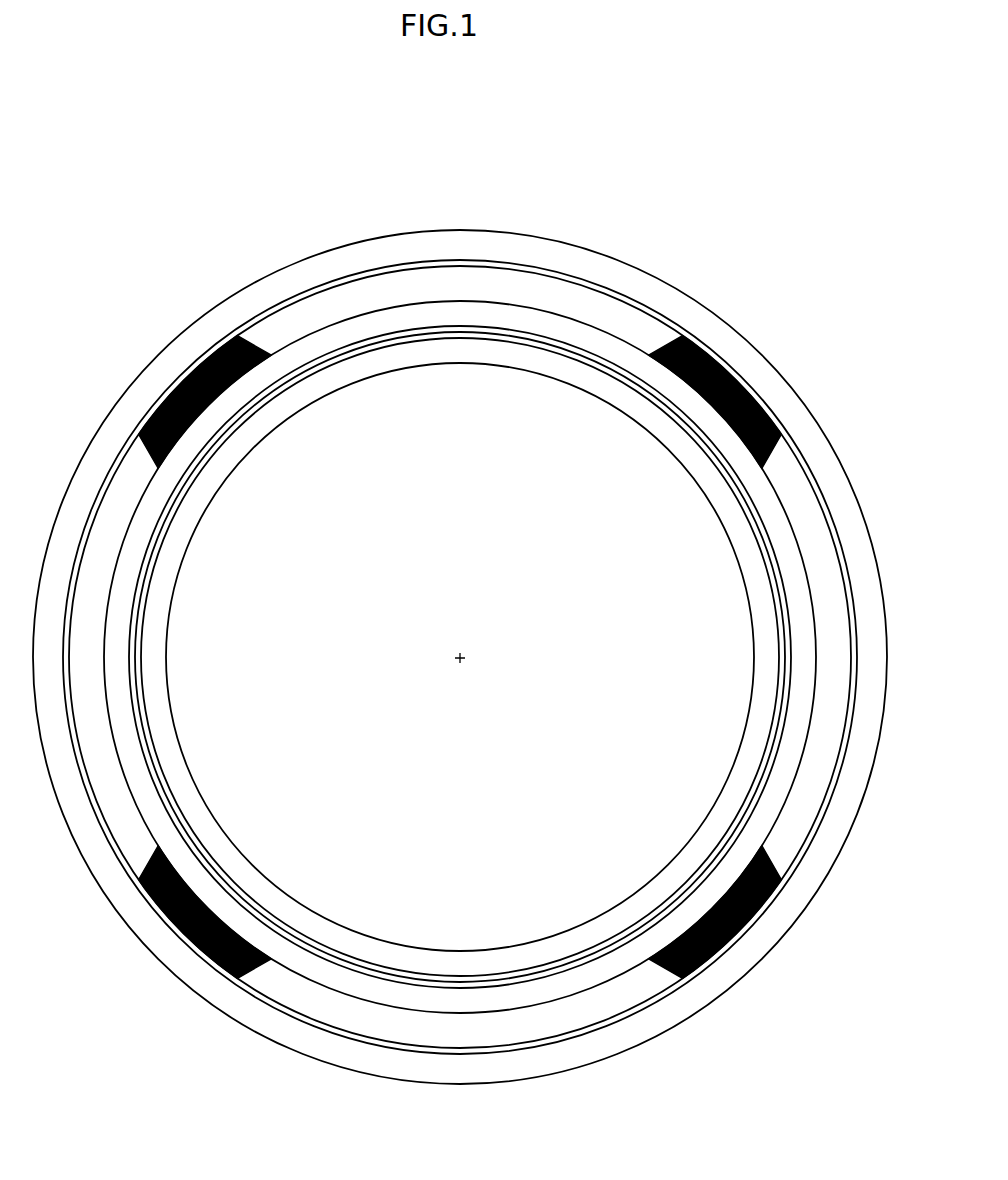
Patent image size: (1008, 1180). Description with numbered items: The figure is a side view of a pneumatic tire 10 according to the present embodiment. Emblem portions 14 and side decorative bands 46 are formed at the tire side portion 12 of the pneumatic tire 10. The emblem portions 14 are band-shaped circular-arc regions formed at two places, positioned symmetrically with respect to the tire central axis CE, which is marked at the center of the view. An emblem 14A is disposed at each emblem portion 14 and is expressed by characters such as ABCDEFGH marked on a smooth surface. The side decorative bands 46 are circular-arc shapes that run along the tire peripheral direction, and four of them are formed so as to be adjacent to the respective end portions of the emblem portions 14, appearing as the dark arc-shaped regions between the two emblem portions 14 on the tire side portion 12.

The pneumatic tire 10 is at (740, 178).
The tire side portion 12 is at (793, 498).
The emblem portion 14 is at (457, 270).
The emblem 14A is at (528, 270).
The side decorative band 46 is at (163, 392).
The tire central axis CE is at (466, 656).